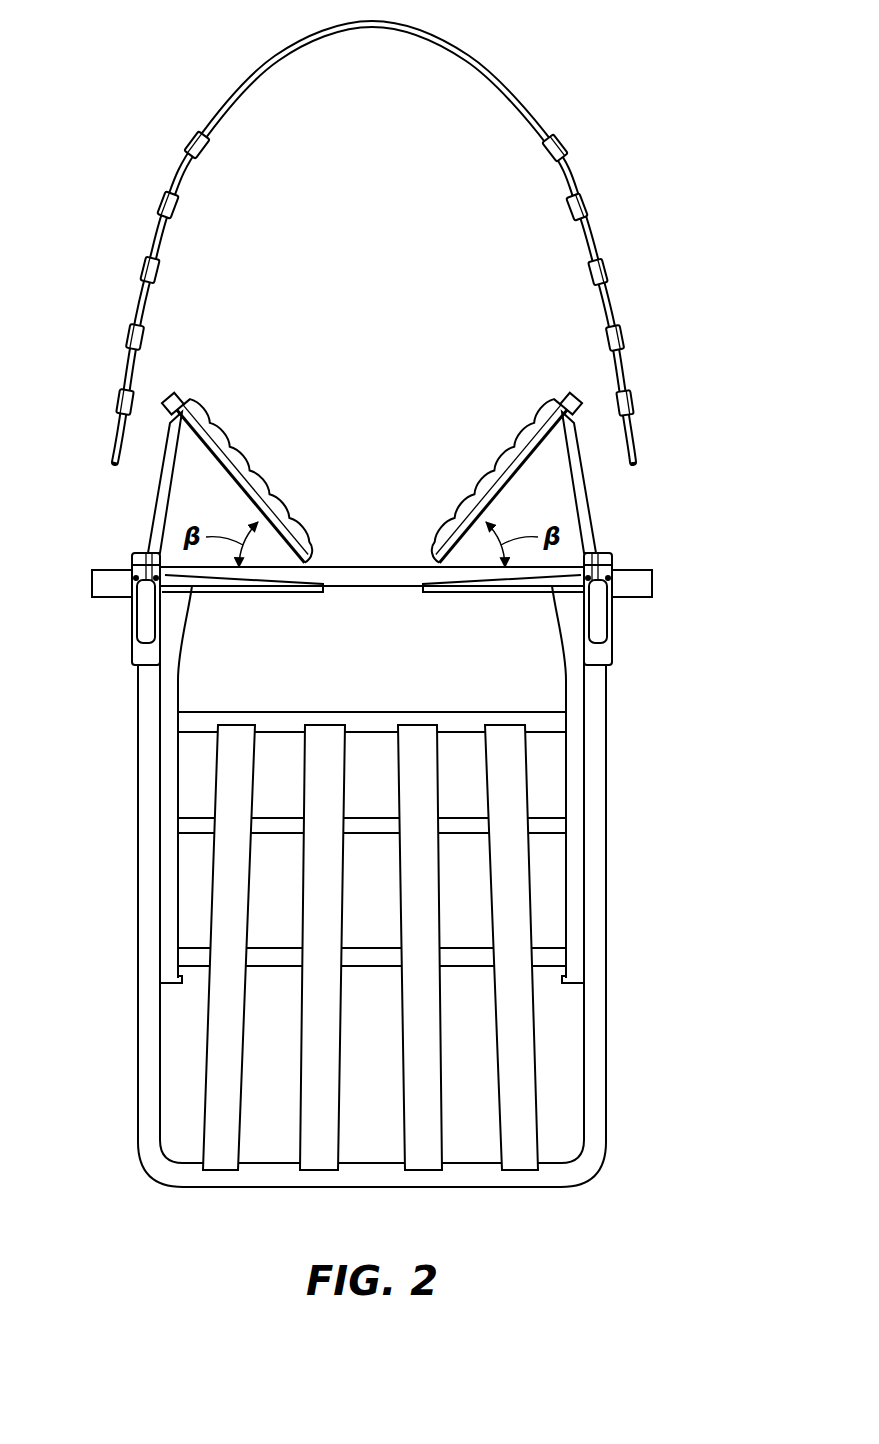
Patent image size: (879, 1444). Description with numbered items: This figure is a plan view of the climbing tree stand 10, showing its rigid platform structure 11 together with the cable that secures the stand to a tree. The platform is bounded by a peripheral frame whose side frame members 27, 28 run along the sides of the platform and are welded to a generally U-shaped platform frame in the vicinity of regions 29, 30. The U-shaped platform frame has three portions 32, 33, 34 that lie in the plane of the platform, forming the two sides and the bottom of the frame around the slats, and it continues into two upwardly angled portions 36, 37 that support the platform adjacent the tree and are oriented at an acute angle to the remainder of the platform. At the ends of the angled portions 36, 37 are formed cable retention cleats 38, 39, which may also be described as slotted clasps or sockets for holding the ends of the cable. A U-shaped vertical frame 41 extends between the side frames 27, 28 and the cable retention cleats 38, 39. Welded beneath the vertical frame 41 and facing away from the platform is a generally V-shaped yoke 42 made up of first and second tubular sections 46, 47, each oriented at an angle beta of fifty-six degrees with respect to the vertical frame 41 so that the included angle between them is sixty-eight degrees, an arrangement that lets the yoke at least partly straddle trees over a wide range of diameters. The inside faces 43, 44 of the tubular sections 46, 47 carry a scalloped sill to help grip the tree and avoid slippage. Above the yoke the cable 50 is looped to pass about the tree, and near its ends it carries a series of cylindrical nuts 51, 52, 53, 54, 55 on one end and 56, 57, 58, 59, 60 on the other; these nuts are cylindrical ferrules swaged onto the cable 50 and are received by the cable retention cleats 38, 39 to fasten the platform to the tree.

The climbing tree stand 10 is at (730, 216).
The rigid platform structure 11 is at (410, 922).
The side frame member 27 is at (574, 815).
The side frame member 28 is at (172, 815).
The weld region 29 is at (180, 988).
The weld region 30 is at (562, 988).
The platform frame portion 32 is at (596, 1108).
The platform frame portion 33 is at (140, 1108).
The platform frame portion 34 is at (216, 1183).
The upwardly angled portion 36 is at (597, 705).
The upwardly angled portion 37 is at (148, 700).
The cable retention cleat 38 is at (642, 630).
The cable retention cleat 39 is at (118, 640).
The U-shaped vertical frame 41 is at (356, 588).
The V-shaped yoke 42 is at (372, 437).
The inside face 43 is at (234, 476).
The inside face 44 is at (509, 476).
The tubular section 46 is at (206, 452).
The tubular section 47 is at (540, 452).
The cable 50 is at (276, 60).
The nut 51 is at (113, 403).
The nut 52 is at (128, 337).
The nut 53 is at (142, 270).
The nut 54 is at (162, 207).
The nut 55 is at (190, 147).
The nut 56 is at (561, 148).
The nut 57 is at (590, 207).
The nut 58 is at (610, 272).
The nut 59 is at (626, 338).
The nut 60 is at (636, 403).